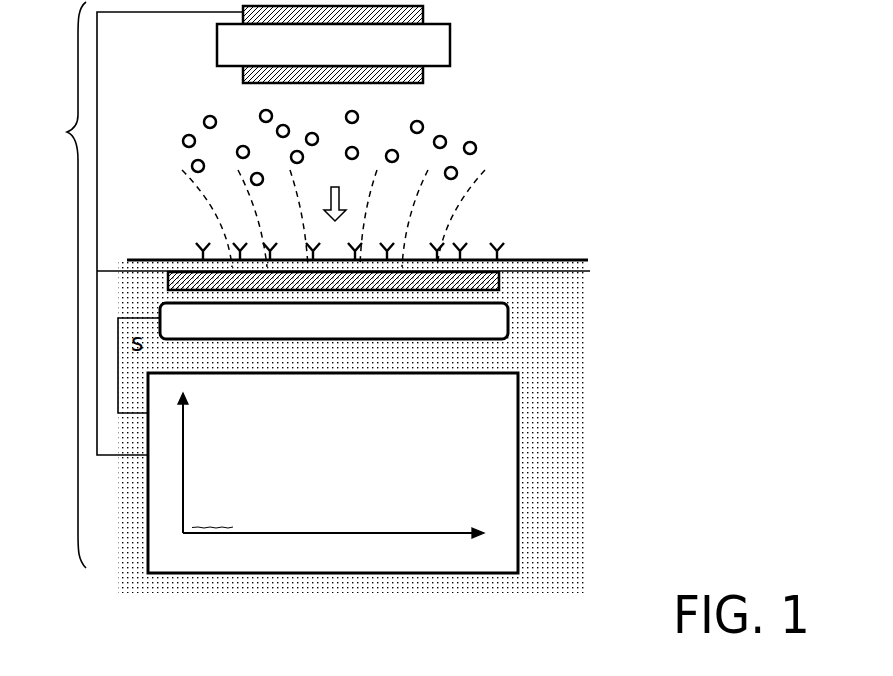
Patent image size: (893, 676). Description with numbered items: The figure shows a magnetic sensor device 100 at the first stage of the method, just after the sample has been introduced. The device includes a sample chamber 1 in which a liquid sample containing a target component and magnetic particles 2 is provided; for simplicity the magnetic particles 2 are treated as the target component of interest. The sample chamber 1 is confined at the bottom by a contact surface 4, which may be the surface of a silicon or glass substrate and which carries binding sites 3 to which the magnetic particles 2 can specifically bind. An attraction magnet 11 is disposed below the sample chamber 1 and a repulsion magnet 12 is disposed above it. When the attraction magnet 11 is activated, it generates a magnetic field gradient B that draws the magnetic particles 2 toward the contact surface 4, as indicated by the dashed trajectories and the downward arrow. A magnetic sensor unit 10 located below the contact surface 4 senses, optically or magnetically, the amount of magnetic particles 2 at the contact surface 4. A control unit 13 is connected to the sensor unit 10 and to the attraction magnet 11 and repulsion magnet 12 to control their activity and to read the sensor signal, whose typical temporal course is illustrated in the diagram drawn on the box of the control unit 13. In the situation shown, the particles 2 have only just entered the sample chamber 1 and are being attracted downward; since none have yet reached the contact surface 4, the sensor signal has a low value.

The magnetic sensor device 100 is at (53, 285).
The repulsion magnet 12 is at (438, 43).
The sample chamber 1 is at (147, 146).
The magnetic particles 2 is at (477, 146).
The magnetic field gradient B is at (477, 180).
The contact surface 4 is at (157, 260).
The binding sites 3 is at (503, 245).
The attraction magnet 11 is at (500, 278).
The magnetic sensor unit 10 is at (497, 323).
The control unit 13 is at (518, 438).